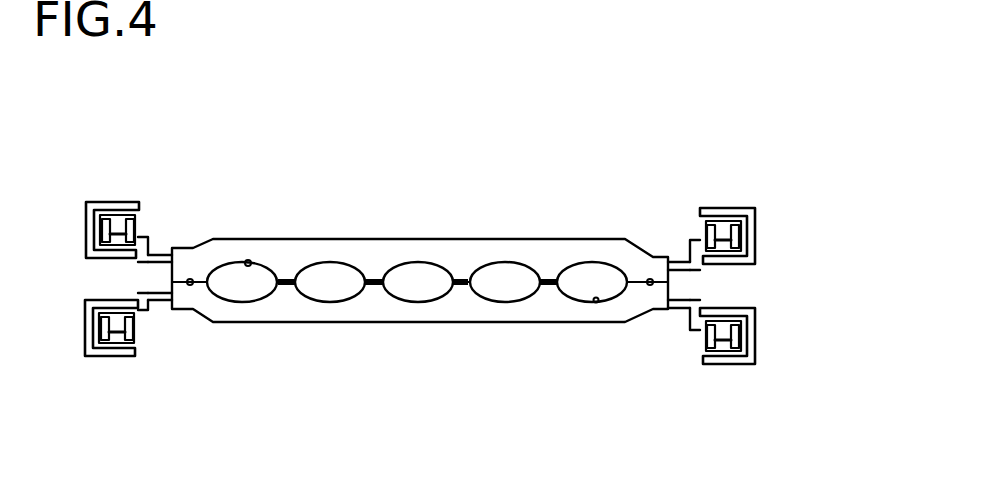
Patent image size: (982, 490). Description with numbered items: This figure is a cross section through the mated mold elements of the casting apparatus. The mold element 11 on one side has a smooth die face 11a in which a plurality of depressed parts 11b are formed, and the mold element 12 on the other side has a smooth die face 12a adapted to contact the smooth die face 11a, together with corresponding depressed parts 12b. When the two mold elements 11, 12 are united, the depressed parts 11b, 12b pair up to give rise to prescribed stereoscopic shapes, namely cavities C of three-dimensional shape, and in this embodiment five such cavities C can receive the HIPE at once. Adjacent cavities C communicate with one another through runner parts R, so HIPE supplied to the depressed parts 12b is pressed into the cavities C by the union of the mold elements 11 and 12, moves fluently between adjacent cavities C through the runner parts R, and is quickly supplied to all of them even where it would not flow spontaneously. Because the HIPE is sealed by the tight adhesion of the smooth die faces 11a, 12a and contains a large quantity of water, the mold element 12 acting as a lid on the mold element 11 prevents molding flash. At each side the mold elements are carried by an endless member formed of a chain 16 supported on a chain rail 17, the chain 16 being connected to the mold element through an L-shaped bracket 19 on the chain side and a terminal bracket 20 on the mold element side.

The mold element 11 is at (478, 240).
The smooth die face 11a is at (202, 273).
The depressed parts 11b is at (250, 261).
The mold element 12 is at (188, 162).
The smooth die face 12a is at (650, 287).
The depressed parts 12b is at (595, 302).
The chain 16 is at (115, 233).
The chain rail 17 is at (86, 238).
The L-shaped bracket 19 is at (142, 238).
The terminal bracket 20 is at (706, 283).
The cavity C is at (248, 288).
The runner part R is at (377, 280).